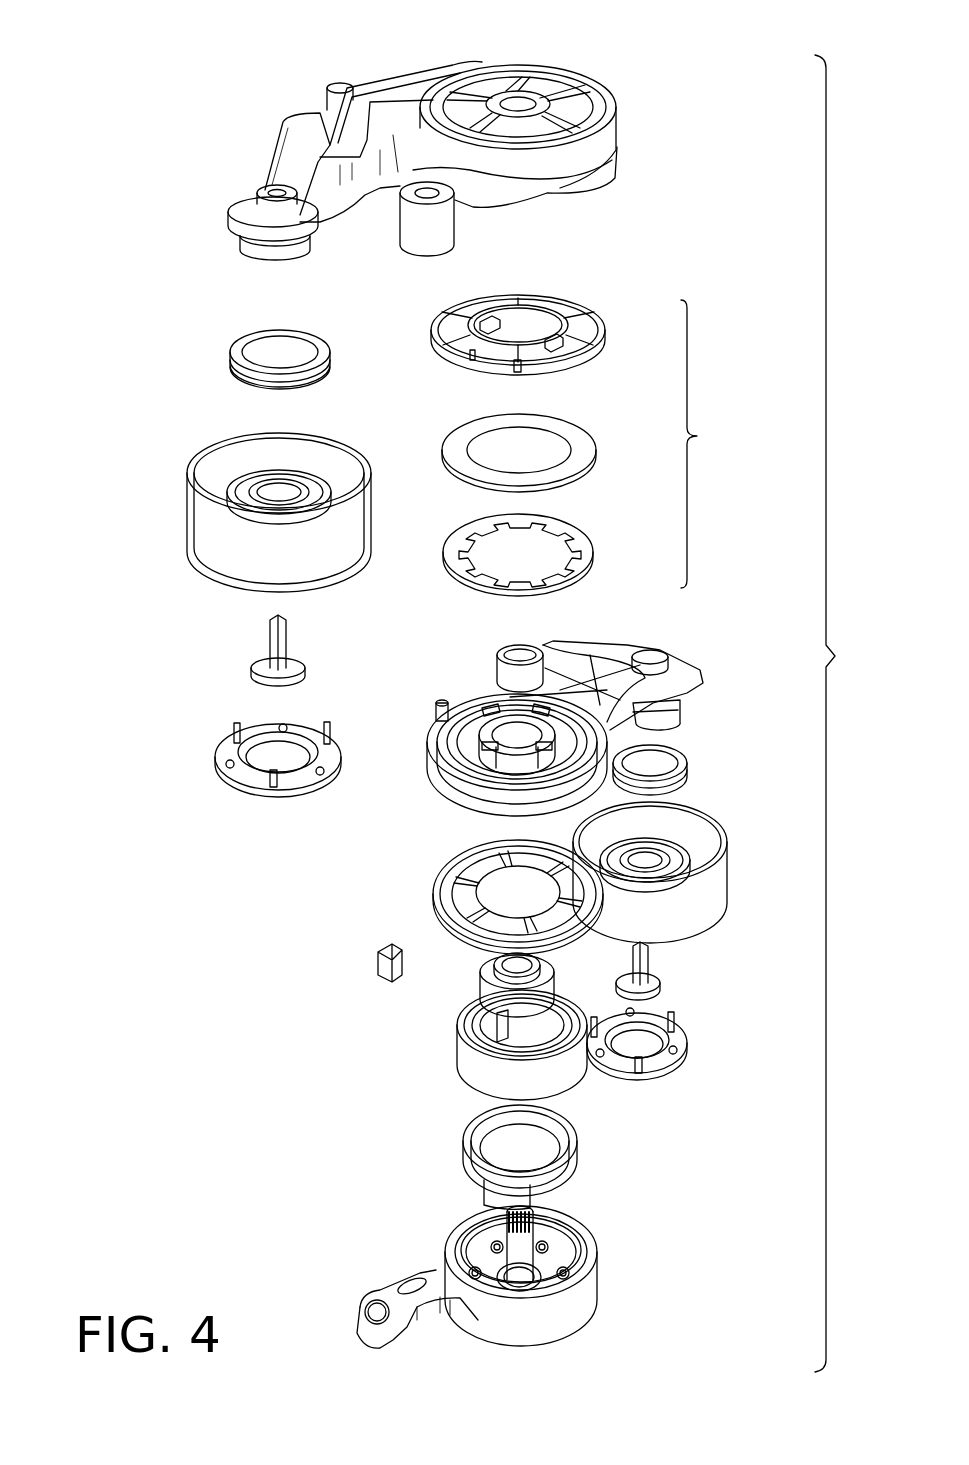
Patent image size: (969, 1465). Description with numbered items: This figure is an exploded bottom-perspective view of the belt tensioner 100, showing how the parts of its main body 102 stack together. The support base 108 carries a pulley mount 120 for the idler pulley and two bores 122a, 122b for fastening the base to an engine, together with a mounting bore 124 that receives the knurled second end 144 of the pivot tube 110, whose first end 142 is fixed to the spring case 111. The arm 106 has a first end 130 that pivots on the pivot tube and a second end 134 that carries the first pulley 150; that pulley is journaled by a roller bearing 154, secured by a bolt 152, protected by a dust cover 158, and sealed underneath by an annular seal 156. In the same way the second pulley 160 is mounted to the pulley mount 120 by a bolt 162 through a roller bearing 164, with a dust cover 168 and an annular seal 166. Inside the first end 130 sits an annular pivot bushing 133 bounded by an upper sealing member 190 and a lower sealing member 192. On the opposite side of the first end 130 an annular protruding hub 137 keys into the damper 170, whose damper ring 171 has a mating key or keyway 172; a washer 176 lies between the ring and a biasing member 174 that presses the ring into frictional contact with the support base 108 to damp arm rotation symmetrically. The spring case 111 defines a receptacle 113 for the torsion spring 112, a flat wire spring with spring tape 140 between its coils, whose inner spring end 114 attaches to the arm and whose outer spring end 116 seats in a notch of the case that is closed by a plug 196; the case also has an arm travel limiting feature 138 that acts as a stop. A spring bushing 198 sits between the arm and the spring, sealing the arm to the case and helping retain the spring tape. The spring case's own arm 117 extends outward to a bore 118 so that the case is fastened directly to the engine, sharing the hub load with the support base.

The belt tensioner 100 is at (145, 75).
The main body 102 is at (848, 713).
The arm 106 is at (598, 665).
The support base 108 is at (488, 195).
The pivot tube 110 is at (515, 1262).
The spring case 111 is at (580, 1305).
The torsion spring 112 is at (465, 1065).
The receptacle 113 is at (575, 1237).
The inner spring end 114 is at (495, 1025).
The outer spring end 116 is at (480, 985).
The arm of the spring case 117 is at (410, 1323).
The bore 118 is at (375, 1308).
The pulley mount 120 is at (250, 262).
The bore 122a is at (343, 86).
The bore 122b is at (411, 175).
The mounting bore 124 is at (517, 98).
The first end of the arm 130 is at (445, 780).
The annular pivot bushing 133 is at (512, 738).
The second end of the arm 134 is at (683, 652).
The annular protruding hub 137 is at (570, 727).
The arm travel limiting feature 138 is at (470, 700).
The spring tape 140 is at (578, 1140).
The first end of the pivot tube 142 is at (522, 1288).
The second end of the pivot tube 144 is at (505, 1222).
The first pulley 150 is at (713, 885).
The bolt 152 is at (650, 963).
The roller bearing 154 is at (668, 852).
The annular seal 156 is at (695, 765).
The dust cover 158 is at (690, 1045).
The second pulley 160 is at (188, 515).
The bolt 162 is at (268, 640).
The roller bearing 164 is at (300, 490).
The annular seal 166 is at (228, 356).
The dust cover 168 is at (235, 752).
The damper 170 is at (713, 444).
The damper ring 171 is at (605, 332).
The key or keyway 172 is at (500, 325).
The biasing member 174 is at (590, 558).
The washer 176 is at (600, 453).
The upper sealing member 190 is at (545, 963).
The lower sealing member 192 is at (500, 650).
The plug 196 is at (372, 962).
The spring bushing 198 is at (432, 895).